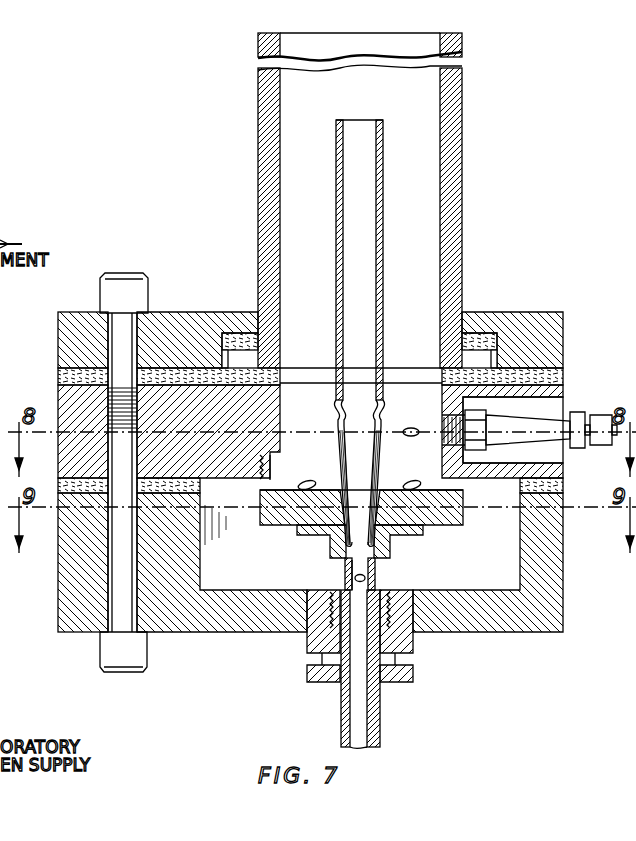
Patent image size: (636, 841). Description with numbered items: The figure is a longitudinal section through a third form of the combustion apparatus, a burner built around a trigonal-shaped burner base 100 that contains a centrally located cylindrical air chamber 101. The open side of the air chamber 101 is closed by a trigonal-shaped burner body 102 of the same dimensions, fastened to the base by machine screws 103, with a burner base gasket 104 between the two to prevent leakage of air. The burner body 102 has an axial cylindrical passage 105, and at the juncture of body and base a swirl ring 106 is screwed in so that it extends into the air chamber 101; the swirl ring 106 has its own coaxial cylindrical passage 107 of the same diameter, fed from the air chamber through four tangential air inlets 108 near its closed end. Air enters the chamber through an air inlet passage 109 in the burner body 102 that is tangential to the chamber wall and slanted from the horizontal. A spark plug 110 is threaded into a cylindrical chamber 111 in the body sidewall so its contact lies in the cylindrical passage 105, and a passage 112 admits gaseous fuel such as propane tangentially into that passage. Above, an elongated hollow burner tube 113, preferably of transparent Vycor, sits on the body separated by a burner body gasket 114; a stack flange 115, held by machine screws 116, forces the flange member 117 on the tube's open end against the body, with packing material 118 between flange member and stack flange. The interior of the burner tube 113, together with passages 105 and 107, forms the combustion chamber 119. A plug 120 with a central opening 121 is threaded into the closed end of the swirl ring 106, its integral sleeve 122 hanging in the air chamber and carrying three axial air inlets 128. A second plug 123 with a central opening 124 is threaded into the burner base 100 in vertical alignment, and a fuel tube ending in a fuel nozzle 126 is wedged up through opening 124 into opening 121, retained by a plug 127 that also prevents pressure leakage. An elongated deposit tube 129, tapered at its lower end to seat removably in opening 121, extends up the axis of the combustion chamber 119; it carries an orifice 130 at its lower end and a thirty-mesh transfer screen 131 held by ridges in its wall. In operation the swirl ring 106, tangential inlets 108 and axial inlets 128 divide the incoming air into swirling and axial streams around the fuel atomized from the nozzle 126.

The burner base 100 is at (68, 633).
The air chamber 101 is at (485, 563).
The burner body 102 is at (60, 392).
The machine screws 103 is at (138, 672).
The burner base gasket 104 is at (60, 484).
The cylindrical passage 105 is at (322, 431).
The swirl ring 106 is at (452, 510).
The cylindrical passage 107 is at (322, 477).
The tangential air inlets 108 is at (418, 484).
The air inlet passage 109 is at (237, 472).
The spark plug 110 is at (572, 420).
The cylindrical chamber 111 is at (530, 417).
The fuel passage 112 is at (406, 428).
The burner tube 113 is at (462, 118).
The burner body gasket 114 is at (563, 378).
The stack flange 115 is at (188, 312).
The machine screws 116 is at (128, 273).
The flange member 117 is at (258, 352).
The packing material 118 is at (486, 340).
The combustion chamber 119 is at (424, 232).
The plug 120 is at (408, 542).
The central opening 121 is at (376, 566).
The sleeve 122 is at (345, 576).
The plug 123 is at (312, 650).
The central opening 124 is at (406, 648).
The fuel nozzle 126 is at (345, 694).
The plug 127 is at (412, 676).
The axial air inlets 128 is at (366, 578).
The deposit tube 129 is at (336, 200).
The orifice 130 is at (346, 547).
The transfer screen 131 is at (346, 398).